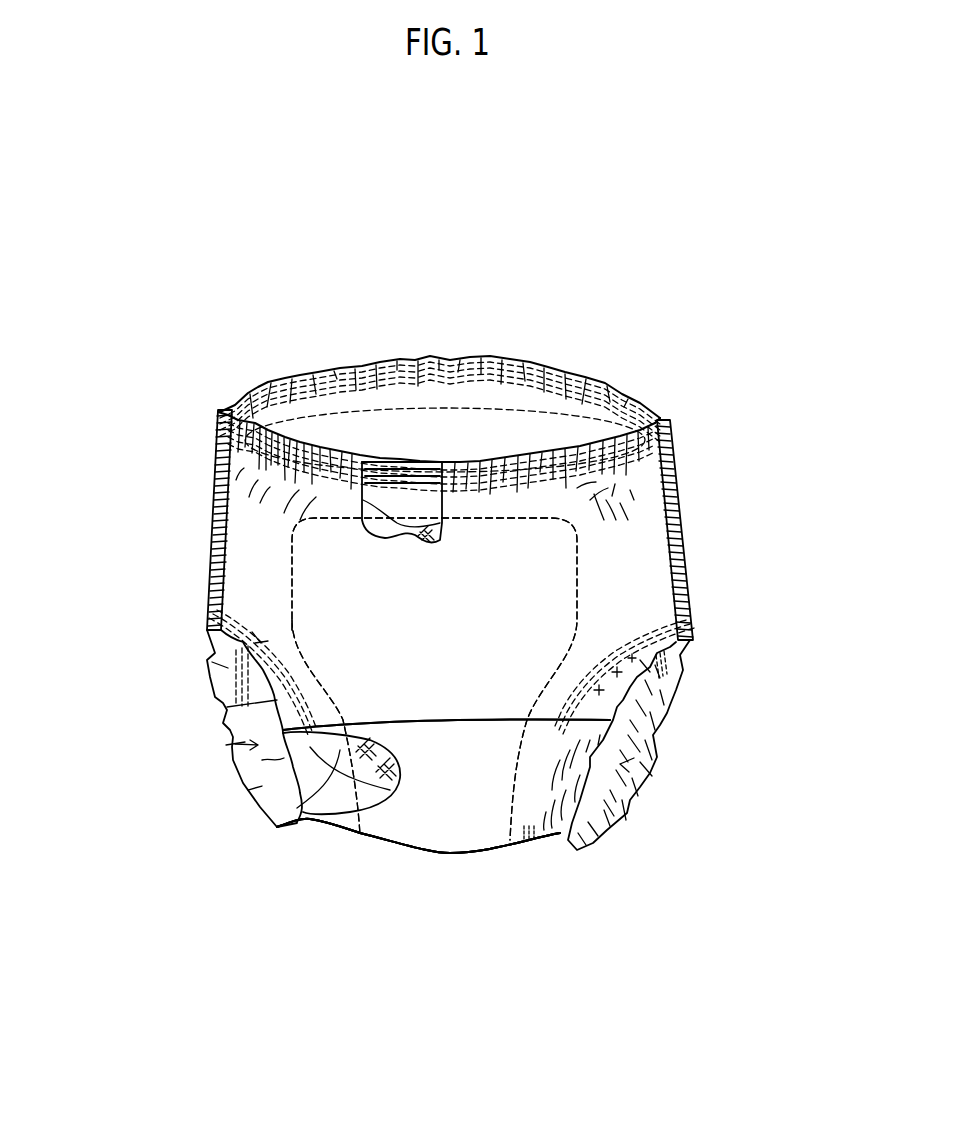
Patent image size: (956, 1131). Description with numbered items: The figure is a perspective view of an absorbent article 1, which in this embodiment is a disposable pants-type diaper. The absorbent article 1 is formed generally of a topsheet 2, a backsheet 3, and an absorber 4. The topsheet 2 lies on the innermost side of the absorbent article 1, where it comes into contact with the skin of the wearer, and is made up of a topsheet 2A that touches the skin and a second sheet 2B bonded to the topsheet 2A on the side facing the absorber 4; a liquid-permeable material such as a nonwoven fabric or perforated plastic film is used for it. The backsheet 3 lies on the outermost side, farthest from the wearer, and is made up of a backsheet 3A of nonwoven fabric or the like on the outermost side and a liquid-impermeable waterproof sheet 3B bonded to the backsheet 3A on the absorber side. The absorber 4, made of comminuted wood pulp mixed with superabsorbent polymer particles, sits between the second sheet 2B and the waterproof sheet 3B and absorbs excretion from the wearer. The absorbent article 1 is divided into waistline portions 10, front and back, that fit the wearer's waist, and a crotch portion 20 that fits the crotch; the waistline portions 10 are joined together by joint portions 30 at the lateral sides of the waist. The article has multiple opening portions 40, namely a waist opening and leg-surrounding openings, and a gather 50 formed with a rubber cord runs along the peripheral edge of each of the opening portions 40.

The absorbent article 1 is at (626, 297).
The waistline portions 10 is at (621, 381).
The crotch portion 20 is at (528, 864).
The joint portions 30 is at (217, 520).
The opening portions 40 is at (330, 405).
The gather 50 is at (368, 462).
The topsheet 2 is at (163, 797).
The topsheet 2A is at (268, 780).
The second sheet 2B is at (277, 827).
The backsheet 3 is at (393, 925).
The backsheet 3A is at (377, 827).
The waterproof sheet 3B is at (343, 800).
The absorber 4 is at (403, 803).